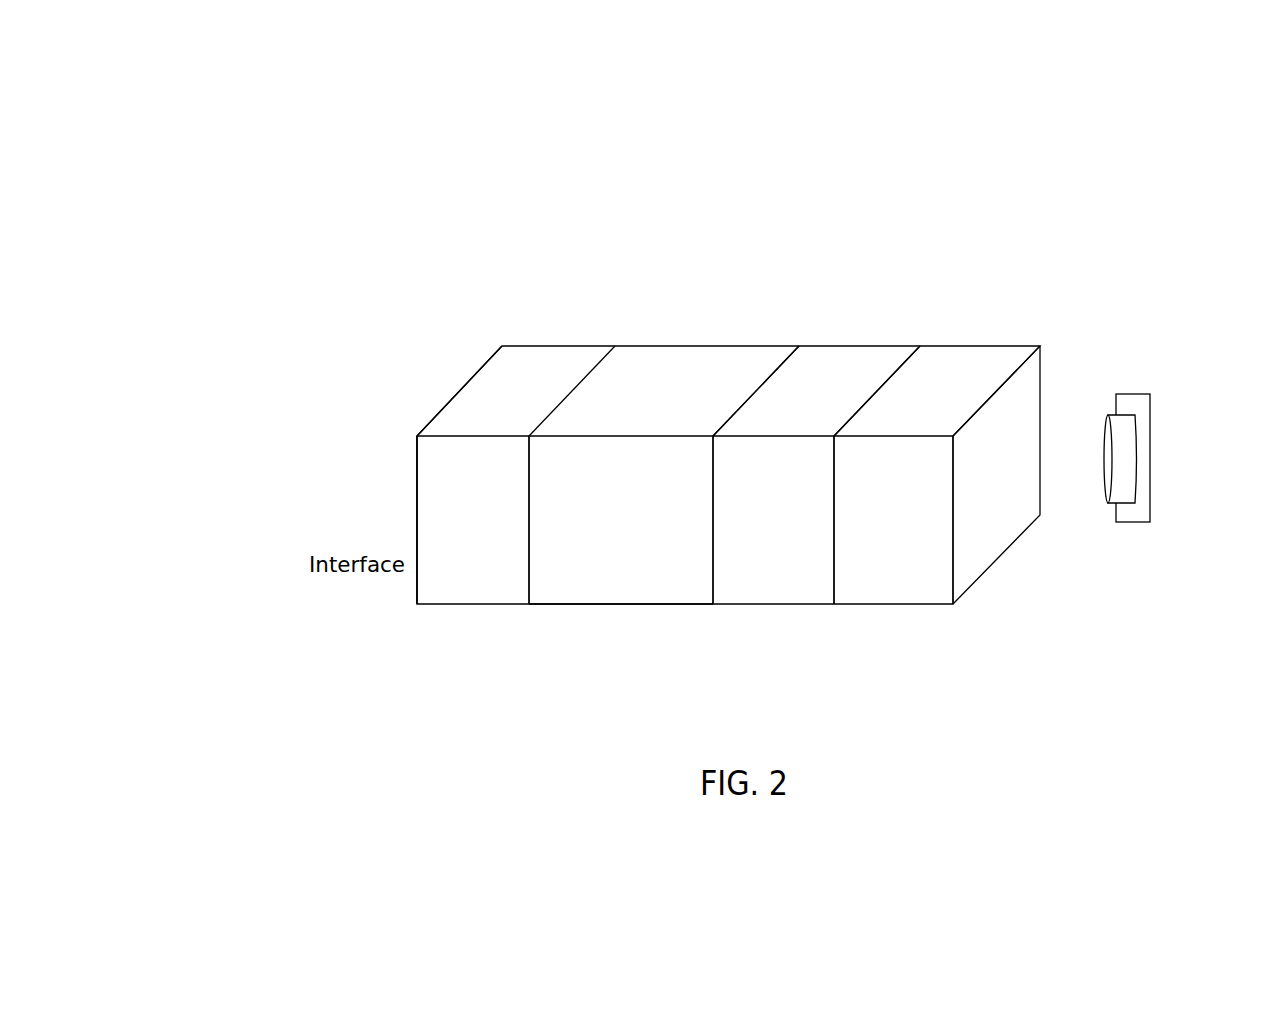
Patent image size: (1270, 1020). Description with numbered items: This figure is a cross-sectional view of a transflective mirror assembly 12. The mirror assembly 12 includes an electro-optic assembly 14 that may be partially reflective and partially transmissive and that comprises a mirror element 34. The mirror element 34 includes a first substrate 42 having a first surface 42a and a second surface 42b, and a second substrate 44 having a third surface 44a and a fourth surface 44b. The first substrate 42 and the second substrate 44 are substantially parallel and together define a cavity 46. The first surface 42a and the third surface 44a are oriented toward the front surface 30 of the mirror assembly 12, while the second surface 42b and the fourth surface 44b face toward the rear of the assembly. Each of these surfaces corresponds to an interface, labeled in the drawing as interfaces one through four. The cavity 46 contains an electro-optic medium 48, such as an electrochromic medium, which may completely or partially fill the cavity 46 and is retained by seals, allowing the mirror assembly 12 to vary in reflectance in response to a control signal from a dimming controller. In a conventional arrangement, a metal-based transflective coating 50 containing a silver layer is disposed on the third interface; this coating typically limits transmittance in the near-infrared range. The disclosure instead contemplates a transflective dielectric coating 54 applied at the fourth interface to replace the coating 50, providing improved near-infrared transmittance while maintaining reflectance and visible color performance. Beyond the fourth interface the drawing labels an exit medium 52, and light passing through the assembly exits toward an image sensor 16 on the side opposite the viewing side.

The mirror assembly 12 is at (1066, 146).
The electro-optic assembly 14 is at (294, 367).
The image sensor 16 is at (1125, 501).
The front surface 30 is at (246, 539).
The mirror element 34 is at (440, 358).
The first substrate 42 is at (548, 353).
The first surface 42a is at (417, 599).
The second surface 42b is at (528, 599).
The second substrate 44 is at (858, 363).
The third surface 44a is at (712, 592).
The fourth surface 44b is at (833, 592).
The cavity 46 is at (619, 585).
The electro-optic medium 48 is at (707, 355).
The transflective coating 50 is at (757, 357).
The exit medium 52 is at (965, 362).
The transflective dielectric coating 54 is at (897, 363).